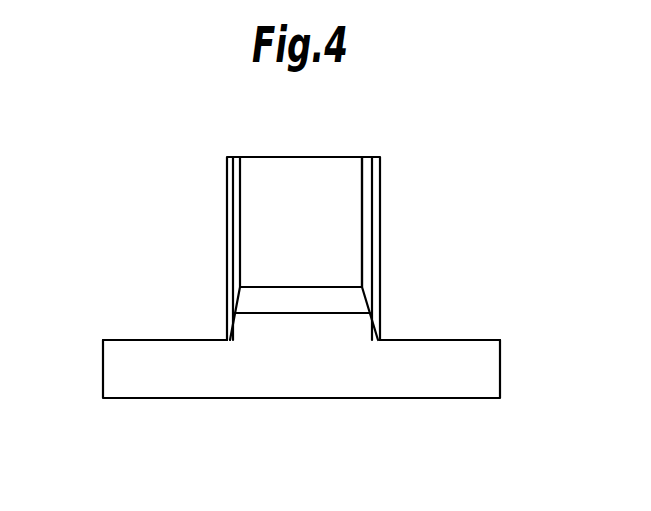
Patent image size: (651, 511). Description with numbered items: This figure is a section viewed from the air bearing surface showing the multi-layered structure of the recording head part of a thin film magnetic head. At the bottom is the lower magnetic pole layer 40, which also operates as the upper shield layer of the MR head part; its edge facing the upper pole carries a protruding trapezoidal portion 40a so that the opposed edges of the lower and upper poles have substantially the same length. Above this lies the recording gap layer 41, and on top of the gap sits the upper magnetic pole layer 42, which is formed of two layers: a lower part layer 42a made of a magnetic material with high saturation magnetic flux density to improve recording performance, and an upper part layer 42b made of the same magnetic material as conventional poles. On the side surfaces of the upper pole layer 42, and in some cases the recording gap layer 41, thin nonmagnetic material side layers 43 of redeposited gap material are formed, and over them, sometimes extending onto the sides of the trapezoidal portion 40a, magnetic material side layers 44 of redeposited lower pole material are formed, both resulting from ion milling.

The lower magnetic pole layer 40 is at (453, 382).
The trapezoidal portion 40a is at (343, 343).
The recording gap layer 41 is at (270, 305).
The upper magnetic pole layer 42 is at (147, 187).
The lower part layer 42a is at (242, 277).
The upper part layer 42b is at (242, 213).
The nonmagnetic material side layer 43 is at (362, 212).
The magnetic material side layer 44 is at (372, 276).